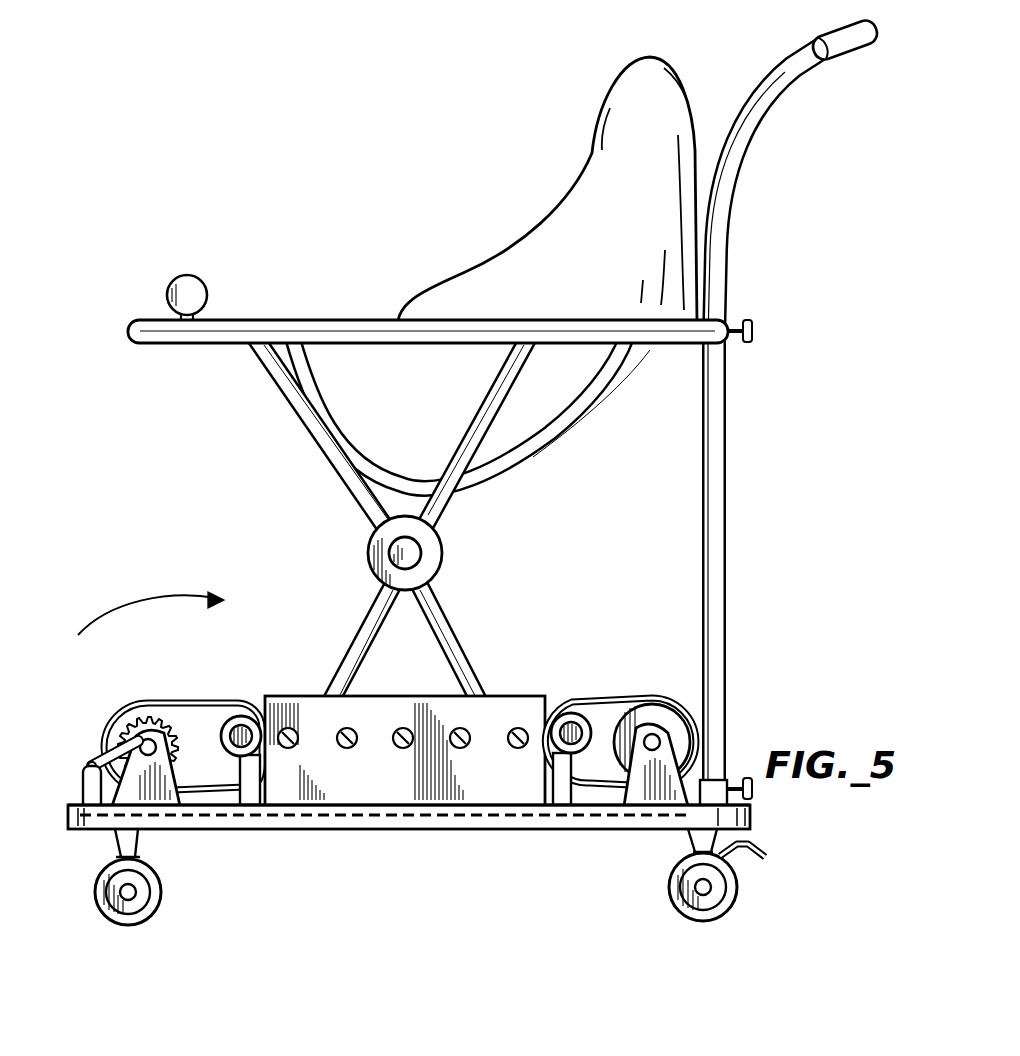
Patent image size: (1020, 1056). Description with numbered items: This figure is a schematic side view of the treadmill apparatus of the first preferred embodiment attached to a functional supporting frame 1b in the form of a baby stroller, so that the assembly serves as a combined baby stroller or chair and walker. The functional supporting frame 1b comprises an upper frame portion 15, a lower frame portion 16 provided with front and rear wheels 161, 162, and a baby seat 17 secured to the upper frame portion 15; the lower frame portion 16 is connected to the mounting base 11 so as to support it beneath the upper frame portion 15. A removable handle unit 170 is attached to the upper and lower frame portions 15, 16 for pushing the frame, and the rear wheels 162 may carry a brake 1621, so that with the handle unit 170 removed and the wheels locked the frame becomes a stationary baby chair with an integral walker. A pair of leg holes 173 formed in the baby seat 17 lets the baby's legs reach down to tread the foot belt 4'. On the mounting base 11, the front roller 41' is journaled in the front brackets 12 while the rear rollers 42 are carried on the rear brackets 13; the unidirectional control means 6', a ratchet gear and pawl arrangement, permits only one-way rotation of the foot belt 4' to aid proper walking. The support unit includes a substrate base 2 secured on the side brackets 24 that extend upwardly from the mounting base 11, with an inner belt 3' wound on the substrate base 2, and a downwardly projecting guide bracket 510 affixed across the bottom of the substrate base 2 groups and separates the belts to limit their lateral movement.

The upper frame portion 15 is at (258, 314).
The leg holes 173 is at (337, 355).
The baby seat 17 is at (405, 493).
The removable handle unit 170 is at (727, 277).
The unidirectional control means 6' is at (84, 732).
The right front roller 41' is at (108, 724).
The right inner belt 3' is at (236, 694).
The substrate base 2 is at (245, 720).
The side brackets 24 is at (366, 712).
The right foot belt 4' is at (587, 694).
The rear rollers 42 is at (652, 700).
The front brackets 12 is at (167, 800).
The rear brackets 13 is at (631, 800).
The guide bracket 510 is at (247, 812).
The mounting base 11 is at (334, 822).
The lower frame portion 16 is at (490, 832).
The functional supporting frame 1b is at (318, 842).
The front wheels 161 is at (163, 888).
The rear wheels 162 is at (668, 882).
The brake 1621 is at (766, 856).